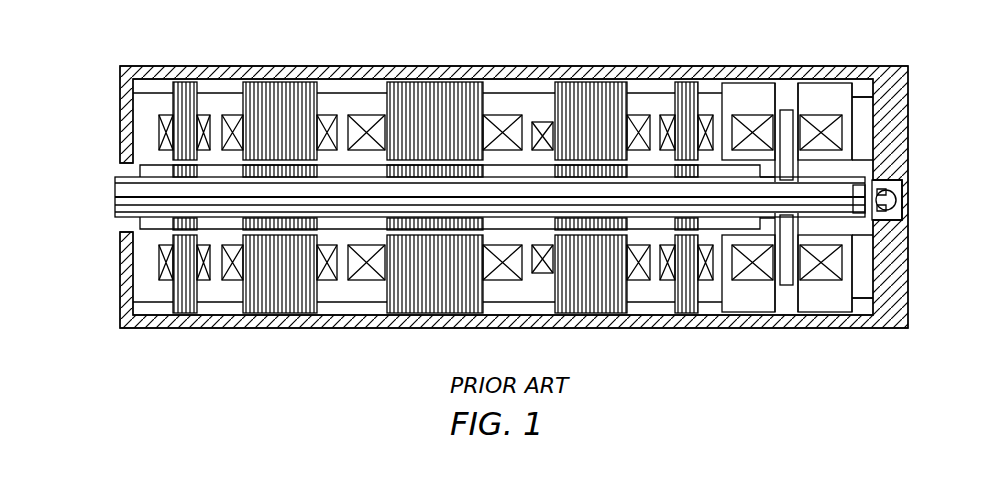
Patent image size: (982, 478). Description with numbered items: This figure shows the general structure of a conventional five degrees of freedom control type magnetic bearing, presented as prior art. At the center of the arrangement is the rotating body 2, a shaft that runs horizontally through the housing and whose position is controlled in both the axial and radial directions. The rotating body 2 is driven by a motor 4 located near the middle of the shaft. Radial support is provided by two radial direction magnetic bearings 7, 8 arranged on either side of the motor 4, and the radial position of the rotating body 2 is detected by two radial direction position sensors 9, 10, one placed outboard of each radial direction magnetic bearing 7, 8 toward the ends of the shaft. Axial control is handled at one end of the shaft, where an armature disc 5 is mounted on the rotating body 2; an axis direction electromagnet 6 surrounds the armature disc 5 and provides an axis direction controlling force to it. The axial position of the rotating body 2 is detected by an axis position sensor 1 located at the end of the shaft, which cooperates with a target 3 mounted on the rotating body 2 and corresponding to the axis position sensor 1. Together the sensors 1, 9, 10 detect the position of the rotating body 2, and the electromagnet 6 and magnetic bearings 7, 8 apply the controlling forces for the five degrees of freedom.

The axis position sensor 1 is at (900, 203).
The rotating body 2 is at (118, 194).
The target 3 is at (862, 190).
The motor 4 is at (441, 92).
The armature disc 5 is at (788, 171).
The axis direction electromagnet 6 is at (752, 95).
The radial direction magnetic bearing 7 is at (286, 90).
The radial direction magnetic bearing 8 is at (597, 92).
The radial direction position sensor 9 is at (186, 86).
The radial direction position sensor 10 is at (689, 92).